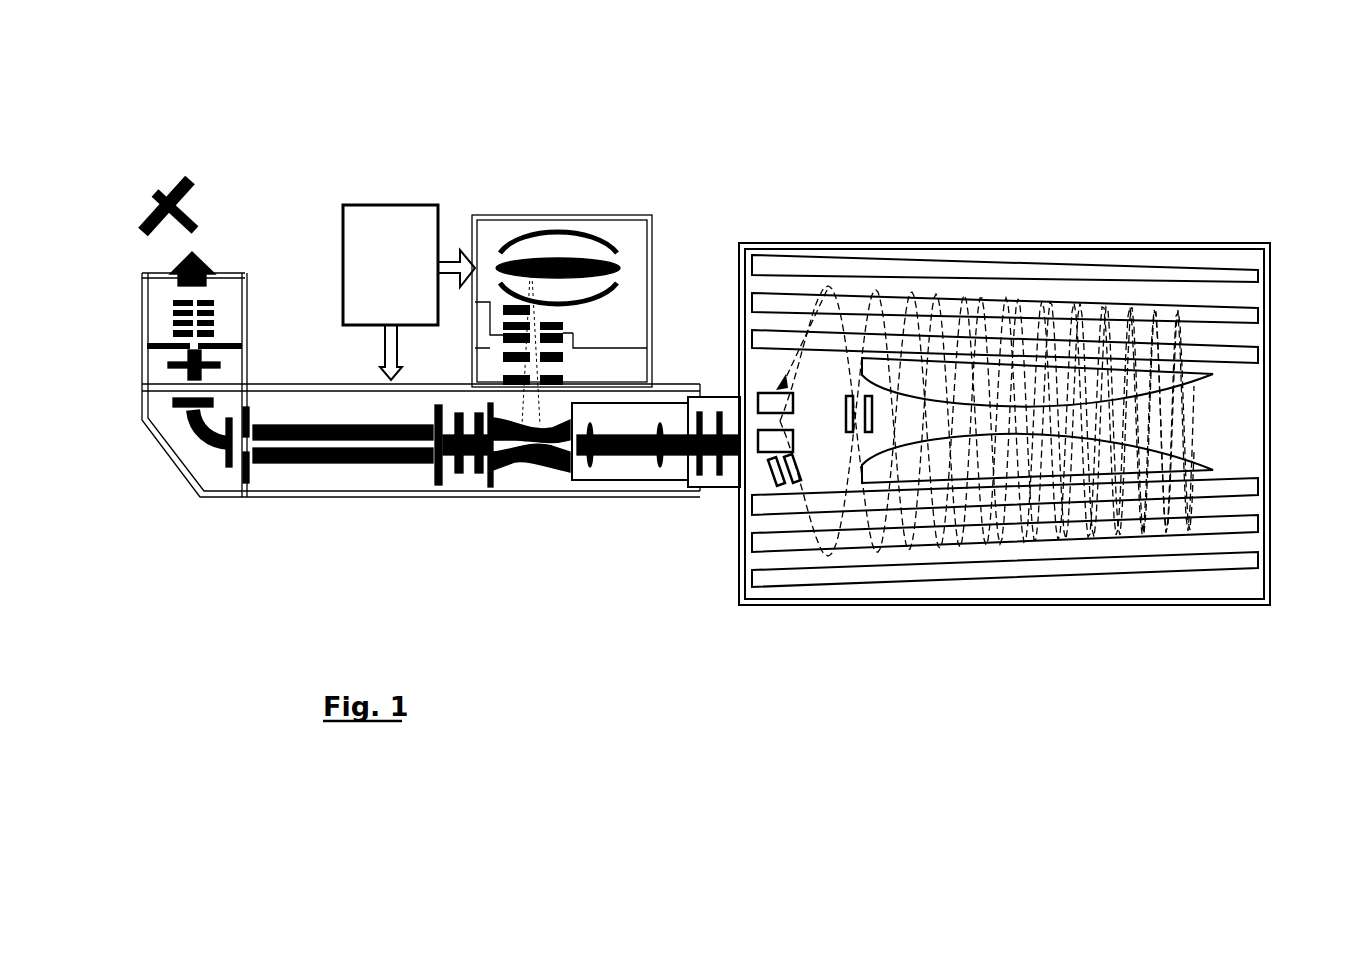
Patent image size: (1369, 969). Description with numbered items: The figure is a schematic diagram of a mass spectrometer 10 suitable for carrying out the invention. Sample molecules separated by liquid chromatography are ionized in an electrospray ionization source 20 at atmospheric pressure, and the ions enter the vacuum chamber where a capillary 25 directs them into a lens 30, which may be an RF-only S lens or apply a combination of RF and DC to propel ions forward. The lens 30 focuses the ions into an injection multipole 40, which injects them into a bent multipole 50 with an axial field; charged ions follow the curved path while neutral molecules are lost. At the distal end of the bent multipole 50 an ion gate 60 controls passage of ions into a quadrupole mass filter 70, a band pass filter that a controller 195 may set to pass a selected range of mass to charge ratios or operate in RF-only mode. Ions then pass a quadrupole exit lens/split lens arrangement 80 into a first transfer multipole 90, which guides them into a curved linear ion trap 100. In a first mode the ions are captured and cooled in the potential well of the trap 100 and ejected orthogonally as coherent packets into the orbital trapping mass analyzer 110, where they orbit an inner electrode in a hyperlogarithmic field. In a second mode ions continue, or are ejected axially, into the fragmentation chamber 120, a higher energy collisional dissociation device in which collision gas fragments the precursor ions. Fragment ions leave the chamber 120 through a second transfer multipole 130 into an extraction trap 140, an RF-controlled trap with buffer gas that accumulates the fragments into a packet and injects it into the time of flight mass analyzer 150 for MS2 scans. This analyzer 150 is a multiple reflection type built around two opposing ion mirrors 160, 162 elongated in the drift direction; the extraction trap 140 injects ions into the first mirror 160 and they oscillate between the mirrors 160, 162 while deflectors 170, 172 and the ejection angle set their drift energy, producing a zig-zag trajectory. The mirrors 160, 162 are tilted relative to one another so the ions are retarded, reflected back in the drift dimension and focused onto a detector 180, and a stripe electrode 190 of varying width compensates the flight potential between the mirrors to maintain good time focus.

The mass spectrometer 10 is at (624, 190).
The electrospray ionization source 20 is at (178, 183).
The capillary 25 is at (198, 287).
The lens 30 is at (214, 307).
The injection multipole 40 is at (218, 365).
The bent multipole 50 is at (212, 418).
The ion gate 60 is at (243, 472).
The quadrupole mass filter 70 is at (330, 462).
The quadrupole exit lens/split lens arrangement 80 is at (437, 472).
The first transfer multipole 90 is at (458, 468).
The curved linear ion trap 100 is at (530, 475).
The orbital trapping mass analyzer 110 is at (527, 240).
The fragmentation chamber 120 is at (660, 405).
The second transfer multipole 130 is at (720, 468).
The extraction trap 140 is at (758, 434).
The time of flight mass analyzer 150 is at (1030, 240).
The first ion mirror 160 is at (945, 580).
The second ion mirror 162 is at (1112, 266).
The deflector 170 is at (797, 482).
The deflector 172 is at (847, 406).
The detector 180 is at (773, 393).
The stripe electrode 190 is at (1218, 382).
The controller 195 is at (409, 292).